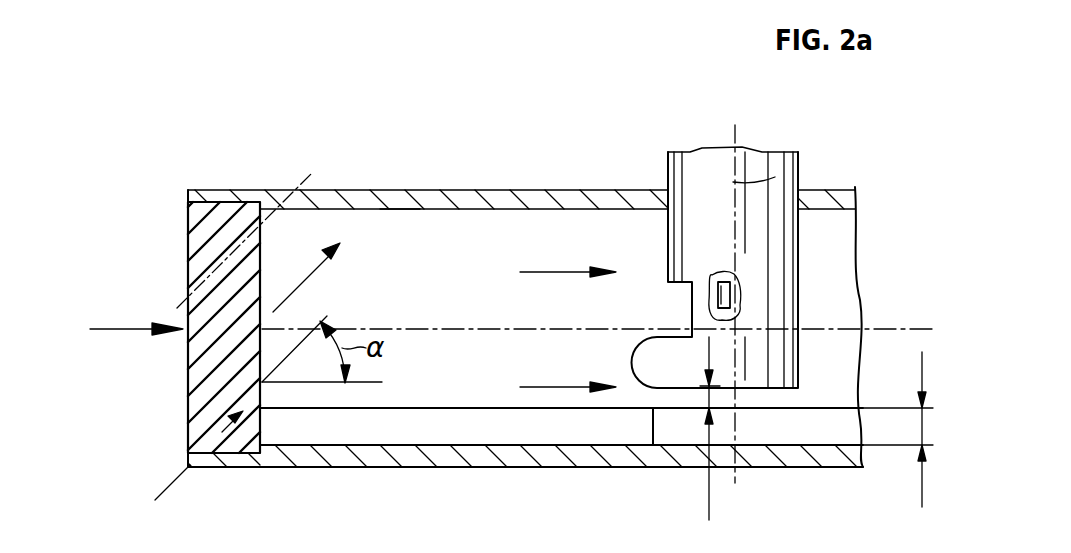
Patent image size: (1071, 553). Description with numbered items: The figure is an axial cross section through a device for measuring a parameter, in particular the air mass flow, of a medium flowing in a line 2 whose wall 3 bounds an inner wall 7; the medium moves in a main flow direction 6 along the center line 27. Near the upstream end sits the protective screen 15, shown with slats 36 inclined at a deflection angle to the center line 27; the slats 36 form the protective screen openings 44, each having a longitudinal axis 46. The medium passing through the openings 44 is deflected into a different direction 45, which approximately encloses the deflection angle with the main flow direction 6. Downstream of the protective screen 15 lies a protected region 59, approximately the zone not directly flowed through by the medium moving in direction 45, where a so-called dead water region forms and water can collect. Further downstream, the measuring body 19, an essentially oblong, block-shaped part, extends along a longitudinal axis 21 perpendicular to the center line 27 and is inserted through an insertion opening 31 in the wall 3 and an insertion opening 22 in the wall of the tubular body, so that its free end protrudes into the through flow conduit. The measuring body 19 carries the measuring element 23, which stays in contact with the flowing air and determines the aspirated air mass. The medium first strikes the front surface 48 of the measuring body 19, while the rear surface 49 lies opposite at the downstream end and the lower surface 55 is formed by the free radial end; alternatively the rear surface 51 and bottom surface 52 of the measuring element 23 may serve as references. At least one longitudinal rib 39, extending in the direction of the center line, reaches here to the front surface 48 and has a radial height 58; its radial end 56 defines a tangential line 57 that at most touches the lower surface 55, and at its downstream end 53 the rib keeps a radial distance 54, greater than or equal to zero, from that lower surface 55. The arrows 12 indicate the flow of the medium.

The line 2 is at (537, 228).
The wall 3 is at (583, 198).
The main flow direction 6 is at (110, 328).
The inner wall 7 is at (392, 211).
The flow direction arrows 12 is at (535, 272).
The protective screen 15 is at (195, 237).
The measuring body 19 is at (692, 263).
The longitudinal axis 21 is at (775, 177).
The insertion opening 22 is at (670, 198).
The measuring element 23 is at (714, 277).
The center line 27 is at (888, 328).
The insertion opening 31 is at (780, 270).
The slats 36 is at (233, 237).
The longitudinal rib 39 is at (422, 427).
The protective screen openings 44 is at (188, 374).
The direction 45 is at (300, 289).
The longitudinal axis 46 is at (298, 175).
The front surface 48 is at (660, 247).
The rear surface 49 is at (808, 236).
The rear surface 51 is at (733, 292).
The bottom surface 52 is at (728, 300).
The downstream end 53 is at (650, 415).
The radial distance 54 is at (712, 395).
The lower surface 55 is at (763, 393).
The radial end 56 is at (467, 408).
The line 57 is at (682, 437).
The radial height 58 is at (917, 427).
The protected region 59 is at (313, 398).